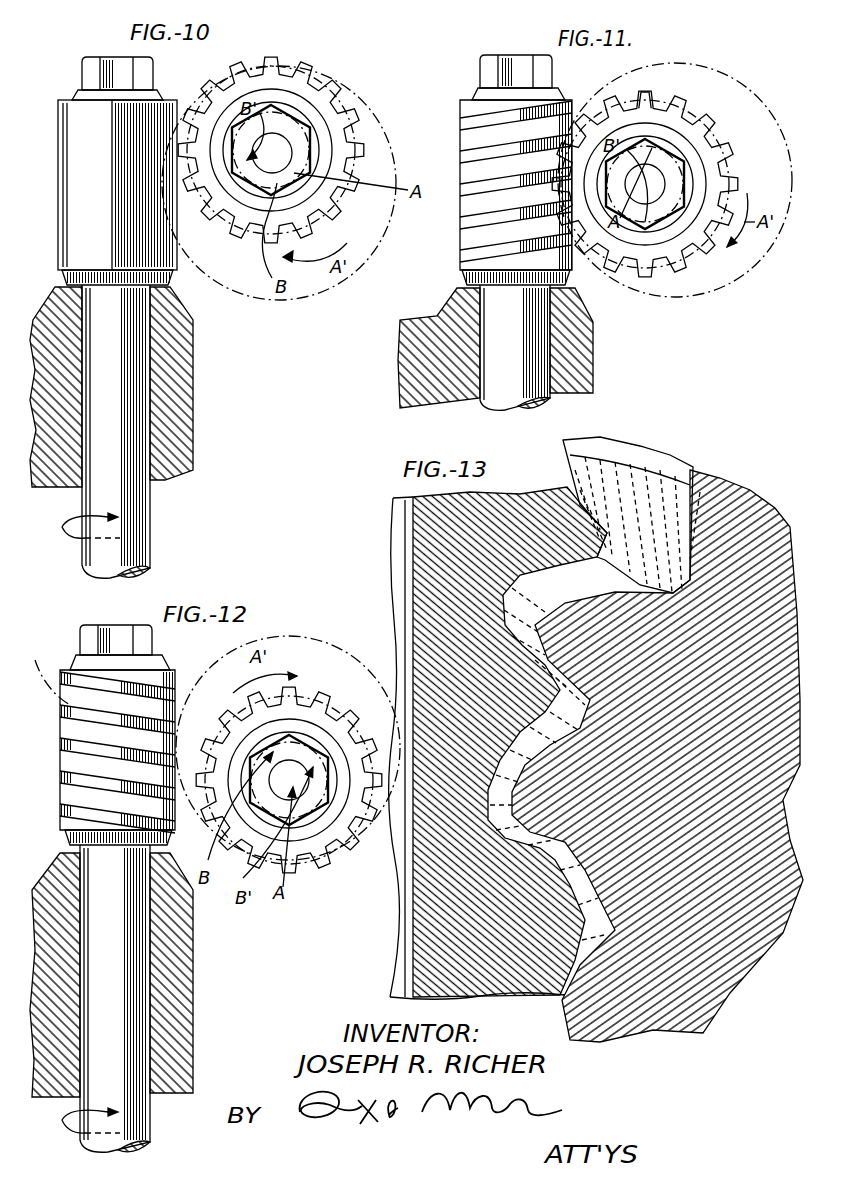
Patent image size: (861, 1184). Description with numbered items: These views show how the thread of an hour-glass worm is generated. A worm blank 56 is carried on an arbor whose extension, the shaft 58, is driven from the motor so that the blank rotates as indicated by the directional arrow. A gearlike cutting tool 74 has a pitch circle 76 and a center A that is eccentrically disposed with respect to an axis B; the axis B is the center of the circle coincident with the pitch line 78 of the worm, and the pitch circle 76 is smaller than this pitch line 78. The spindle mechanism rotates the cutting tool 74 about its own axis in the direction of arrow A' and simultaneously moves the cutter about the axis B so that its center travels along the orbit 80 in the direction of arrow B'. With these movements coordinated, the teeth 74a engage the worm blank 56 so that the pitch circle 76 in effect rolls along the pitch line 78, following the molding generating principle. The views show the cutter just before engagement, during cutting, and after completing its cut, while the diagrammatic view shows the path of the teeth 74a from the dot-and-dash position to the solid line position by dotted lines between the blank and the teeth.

In FIG. 10, the worm blank 56 is at (92, 137).
In FIG. 11, the worm blank 56 is at (478, 258).
In FIG. 12, the worm blank 56 is at (88, 684).
In FIG. 13, the worm blank 56 is at (450, 510).
In FIG. 10, the shaft 58 is at (143, 508).
In FIG. 11, the shaft 58 is at (497, 404).
In FIG. 12, the shaft 58 is at (140, 1118).
In FIG. 10, the gearlike cutting tool 74 is at (330, 103).
In FIG. 11, the gearlike cutting tool 74 is at (645, 184).
In FIG. 12, the gearlike cutting tool 74 is at (322, 715).
In FIG. 13, the gearlike cutting tool 74 is at (747, 933).
In FIG. 11, the teeth 74a is at (645, 104).
In FIG. 13, the teeth 74a is at (607, 437).
In FIG. 10, the pitch circle 76 is at (357, 138).
In FIG. 11, the pitch circle 76 is at (713, 120).
In FIG. 12, the pitch circle 76 is at (223, 733).
In FIG. 10, the pitch line 78 is at (372, 258).
In FIG. 11, the pitch line 78 is at (747, 300).
In FIG. 12, the pitch line 78 is at (318, 633).
In FIG. 10, the orbit 80 is at (308, 177).
In FIG. 11, the orbit 80 is at (660, 152).
In FIG. 12, the orbit 80 is at (313, 747).